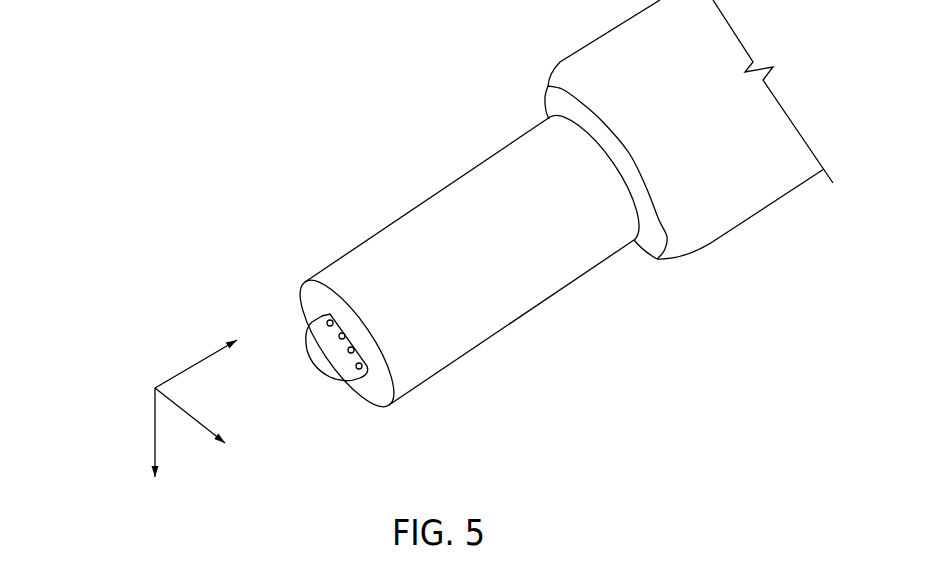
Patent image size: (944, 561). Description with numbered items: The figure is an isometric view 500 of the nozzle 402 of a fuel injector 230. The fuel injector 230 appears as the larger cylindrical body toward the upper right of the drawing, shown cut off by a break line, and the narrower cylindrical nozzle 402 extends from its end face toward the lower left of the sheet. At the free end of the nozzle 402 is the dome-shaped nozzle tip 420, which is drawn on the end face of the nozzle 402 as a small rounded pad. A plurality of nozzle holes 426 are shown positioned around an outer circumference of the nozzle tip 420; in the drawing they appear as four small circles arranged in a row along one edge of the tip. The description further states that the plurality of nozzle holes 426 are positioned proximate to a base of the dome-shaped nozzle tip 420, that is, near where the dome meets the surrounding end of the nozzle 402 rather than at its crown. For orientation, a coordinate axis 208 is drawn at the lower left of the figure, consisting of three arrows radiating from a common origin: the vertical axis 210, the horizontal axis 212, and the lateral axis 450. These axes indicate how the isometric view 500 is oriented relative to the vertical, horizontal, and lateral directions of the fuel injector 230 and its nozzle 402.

The isometric view 500 is at (400, 115).
The fuel injector 230 is at (760, 228).
The nozzle 402 is at (570, 345).
The nozzle tip 420 is at (328, 392).
The plurality of nozzle holes 426 is at (320, 319).
The lateral axis 450 is at (153, 433).
The coordinate axis 208 is at (132, 452).
The vertical axis 210 is at (188, 362).
The horizontal axis 212 is at (195, 408).